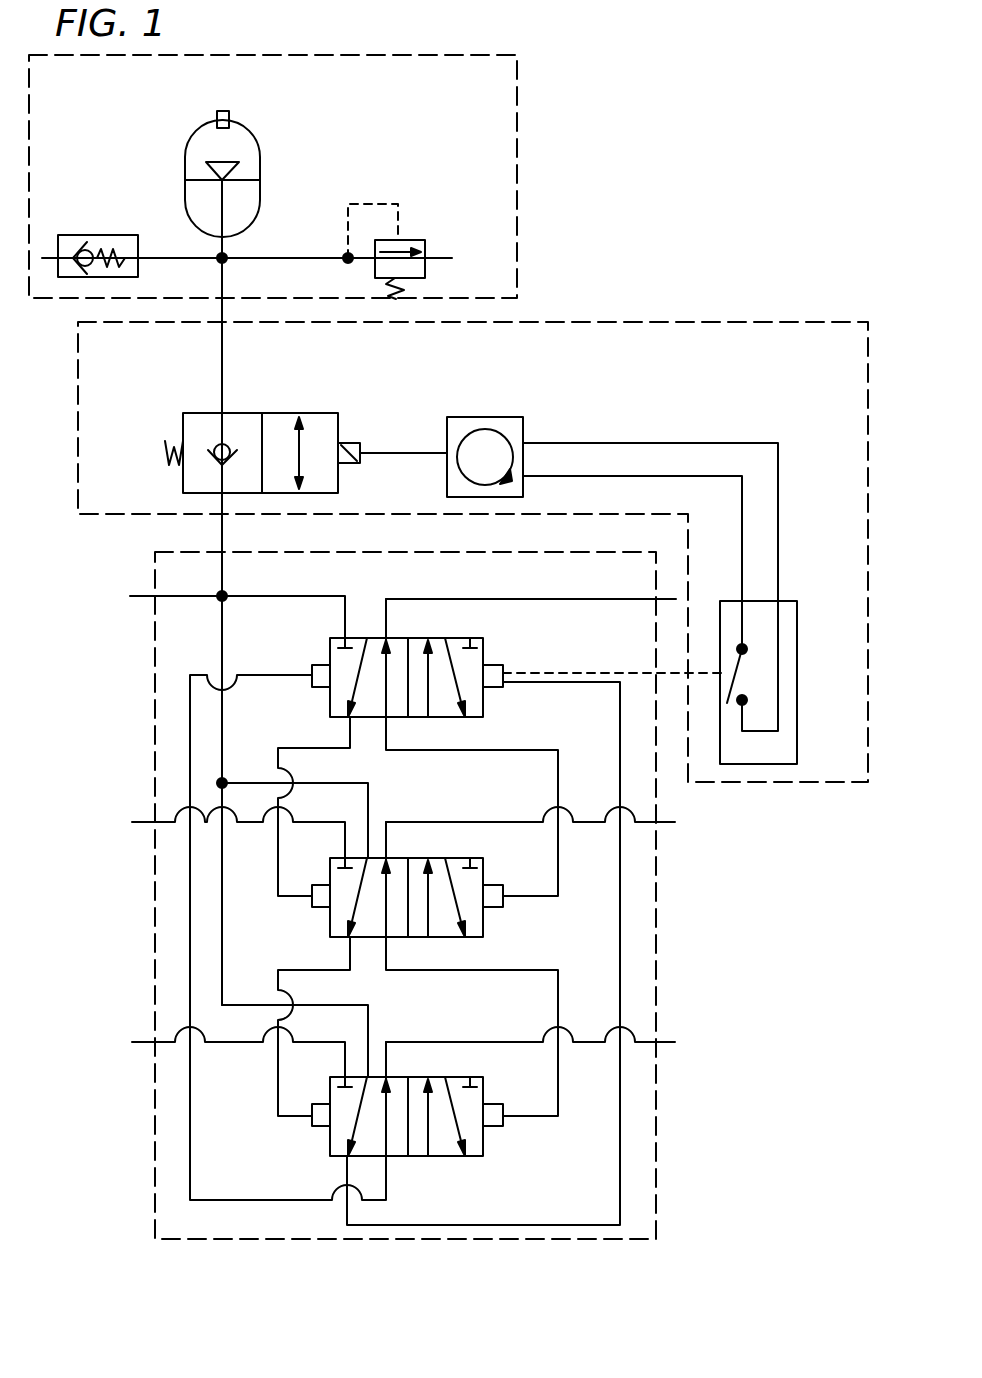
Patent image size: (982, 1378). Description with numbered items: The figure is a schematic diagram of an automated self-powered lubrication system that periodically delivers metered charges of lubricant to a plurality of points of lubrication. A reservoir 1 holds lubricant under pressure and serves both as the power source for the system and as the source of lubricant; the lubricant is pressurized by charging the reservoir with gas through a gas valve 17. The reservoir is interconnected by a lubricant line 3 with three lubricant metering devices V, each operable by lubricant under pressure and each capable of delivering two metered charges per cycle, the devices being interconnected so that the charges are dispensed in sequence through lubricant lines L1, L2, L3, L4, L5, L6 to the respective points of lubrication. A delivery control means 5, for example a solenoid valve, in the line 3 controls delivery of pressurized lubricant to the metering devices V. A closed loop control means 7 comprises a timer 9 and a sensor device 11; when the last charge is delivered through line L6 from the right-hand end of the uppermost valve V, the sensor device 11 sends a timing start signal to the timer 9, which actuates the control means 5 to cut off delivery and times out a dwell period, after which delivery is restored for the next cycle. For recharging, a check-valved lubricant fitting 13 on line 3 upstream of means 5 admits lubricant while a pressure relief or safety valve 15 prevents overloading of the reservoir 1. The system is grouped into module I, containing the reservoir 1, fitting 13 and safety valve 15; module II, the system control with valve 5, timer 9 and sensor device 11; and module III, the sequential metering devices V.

The reservoir 1 is at (259, 142).
The gas valve 17 is at (217, 112).
The lubricant fitting 13 is at (110, 235).
The pressure relief or safety valve 15 is at (430, 240).
The lubricant line 3 is at (222, 358).
The delivery control means 5 is at (270, 413).
The timer 9 is at (505, 417).
The closed loop control means 7 is at (704, 424).
The sensor device 11 is at (810, 599).
The lubricant metering device V is at (490, 639).
The lubricant line L1 is at (675, 1047).
The lubricant line L2 is at (130, 596).
The lubricant line L3 is at (132, 822).
The lubricant line L4 is at (132, 1042).
The lubricant line L5 is at (585, 610).
The lubricant line L6 is at (675, 826).
The module I is at (517, 160).
The module II is at (548, 322).
The module III is at (657, 985).